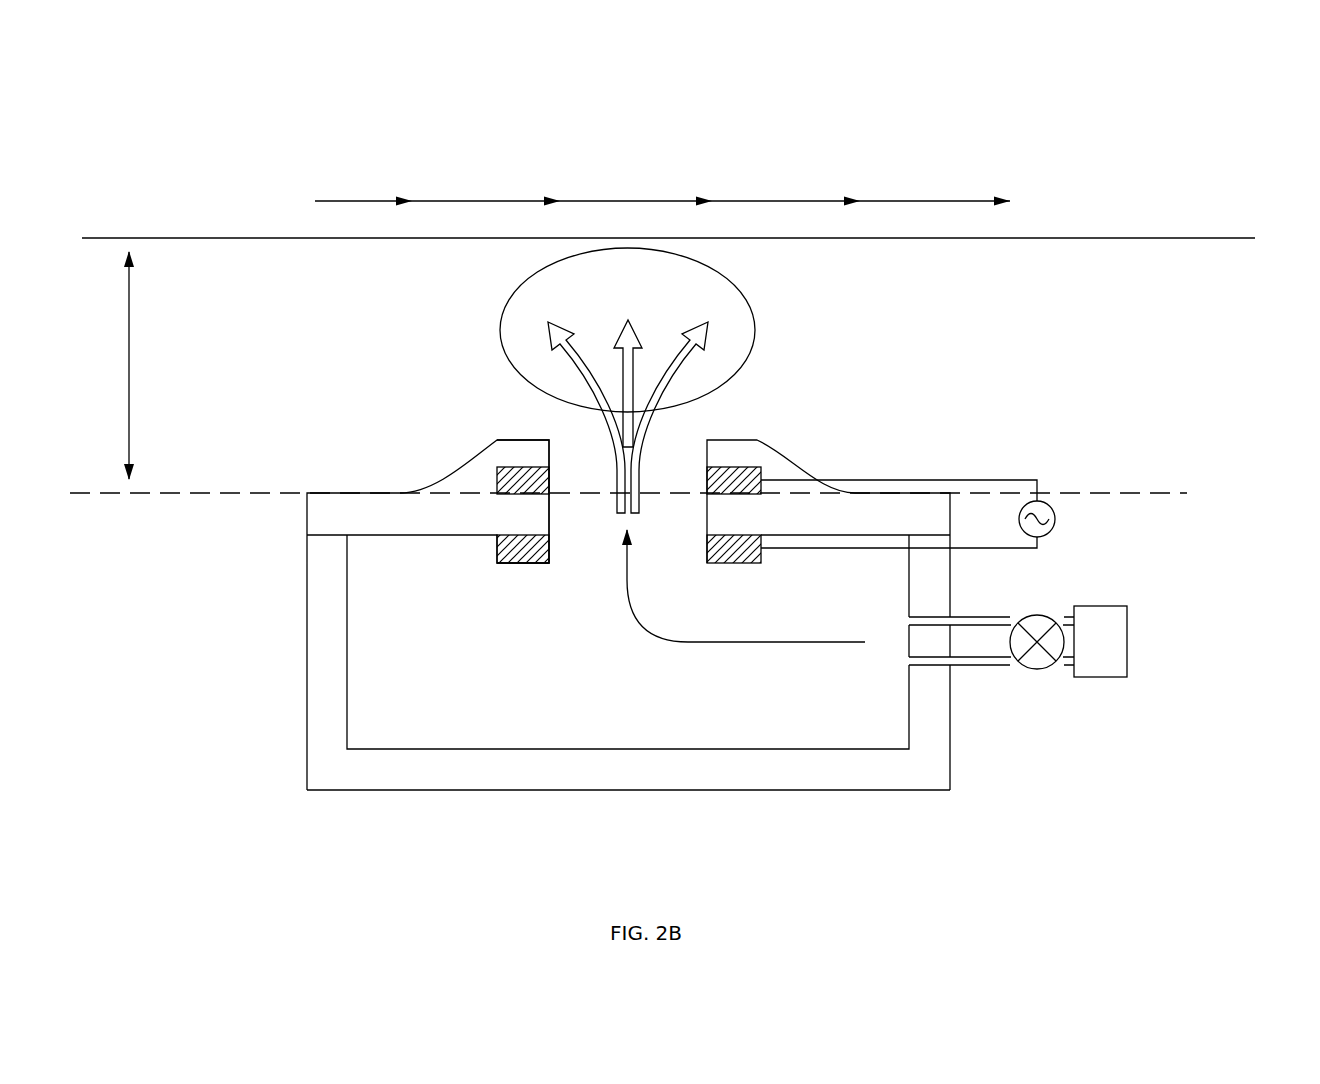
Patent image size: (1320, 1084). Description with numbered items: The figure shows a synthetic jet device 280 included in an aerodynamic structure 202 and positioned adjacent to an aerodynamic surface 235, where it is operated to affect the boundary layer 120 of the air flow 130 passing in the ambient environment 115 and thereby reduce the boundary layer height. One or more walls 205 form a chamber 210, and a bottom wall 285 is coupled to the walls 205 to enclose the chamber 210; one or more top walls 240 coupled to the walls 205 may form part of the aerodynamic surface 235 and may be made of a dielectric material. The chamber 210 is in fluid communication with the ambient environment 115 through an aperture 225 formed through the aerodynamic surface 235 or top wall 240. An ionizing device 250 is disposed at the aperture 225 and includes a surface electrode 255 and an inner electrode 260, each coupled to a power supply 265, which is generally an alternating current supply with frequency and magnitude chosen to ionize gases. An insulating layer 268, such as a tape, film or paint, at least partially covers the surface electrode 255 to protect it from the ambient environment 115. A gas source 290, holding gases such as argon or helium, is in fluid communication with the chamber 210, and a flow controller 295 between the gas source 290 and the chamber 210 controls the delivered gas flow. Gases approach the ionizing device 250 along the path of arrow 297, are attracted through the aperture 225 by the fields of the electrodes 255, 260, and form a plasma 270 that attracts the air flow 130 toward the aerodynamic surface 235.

The air flow 130 is at (365, 200).
The boundary layer 120 is at (243, 340).
The ambient environment 115 is at (415, 360).
The plasma 270 is at (720, 275).
The insulating layer 268 is at (522, 460).
The ionizing device 250 is at (498, 457).
The chamber 210 is at (425, 594).
The aperture 225 is at (680, 443).
The surface electrode 255 is at (707, 488).
The inner electrode 260 is at (747, 565).
The top wall 240 is at (935, 515).
The power supply 265 is at (1062, 513).
The synthetic jet device 280 is at (1230, 460).
The aerodynamic surface 235 is at (1168, 502).
The aerodynamic structure 202 is at (202, 530).
The walls 205 is at (333, 637).
The arrow 297 is at (743, 643).
The flow controller 295 is at (1028, 682).
The gas source 290 is at (1112, 682).
The bottom wall 285 is at (770, 790).